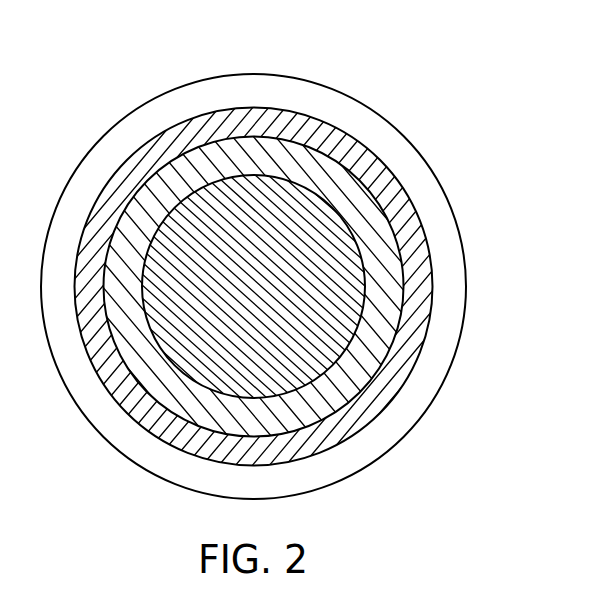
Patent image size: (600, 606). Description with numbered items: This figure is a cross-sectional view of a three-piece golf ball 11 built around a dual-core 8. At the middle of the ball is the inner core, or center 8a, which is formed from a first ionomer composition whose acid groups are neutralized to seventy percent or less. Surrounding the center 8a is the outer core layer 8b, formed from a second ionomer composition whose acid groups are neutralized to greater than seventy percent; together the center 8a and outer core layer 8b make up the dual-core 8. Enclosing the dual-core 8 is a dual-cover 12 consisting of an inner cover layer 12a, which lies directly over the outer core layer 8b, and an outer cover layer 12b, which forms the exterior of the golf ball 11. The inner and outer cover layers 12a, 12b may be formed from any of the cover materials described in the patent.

The golf ball 11 is at (426, 79).
The dual-cover 12 is at (521, 185).
The inner cover layer 12a is at (397, 207).
The outer cover layer 12b is at (445, 245).
The dual-core 8 is at (521, 298).
The inner core (center) 8a is at (308, 357).
The outer core layer 8b is at (365, 325).